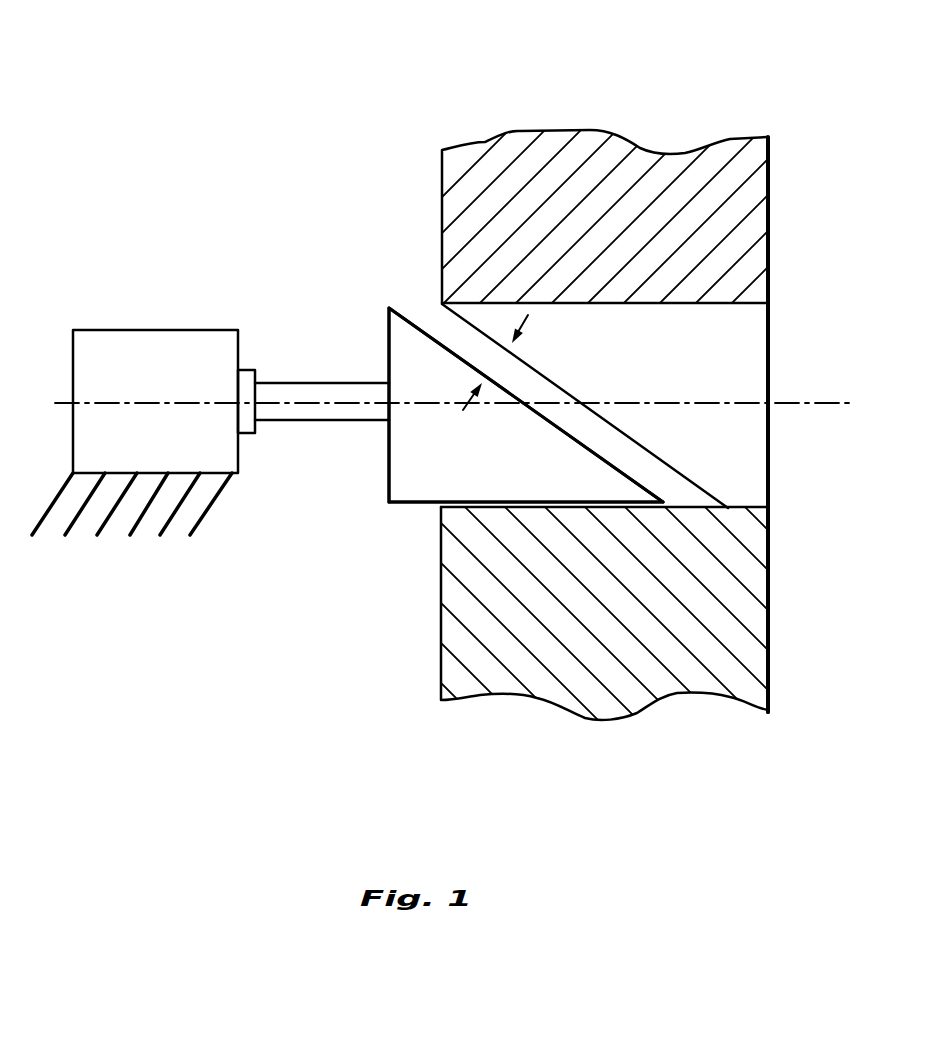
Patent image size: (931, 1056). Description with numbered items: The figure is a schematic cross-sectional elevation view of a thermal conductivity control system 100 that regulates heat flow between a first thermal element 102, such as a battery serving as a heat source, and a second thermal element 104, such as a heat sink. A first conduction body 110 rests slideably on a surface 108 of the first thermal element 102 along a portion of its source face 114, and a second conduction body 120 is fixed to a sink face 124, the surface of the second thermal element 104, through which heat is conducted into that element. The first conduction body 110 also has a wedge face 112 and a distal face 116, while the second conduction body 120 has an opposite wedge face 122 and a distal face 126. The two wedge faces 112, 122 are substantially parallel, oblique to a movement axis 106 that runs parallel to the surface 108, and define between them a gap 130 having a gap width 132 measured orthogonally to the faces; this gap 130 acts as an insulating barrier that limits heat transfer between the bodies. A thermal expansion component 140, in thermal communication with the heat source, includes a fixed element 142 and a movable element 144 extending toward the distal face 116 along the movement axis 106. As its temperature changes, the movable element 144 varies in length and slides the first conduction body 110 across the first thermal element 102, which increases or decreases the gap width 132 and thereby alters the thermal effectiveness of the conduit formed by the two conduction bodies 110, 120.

The thermal conductivity control system 100 is at (288, 120).
The first thermal element 102 is at (448, 675).
The second thermal element 104 is at (448, 178).
The movement axis 106 is at (838, 404).
The surface 108 is at (468, 510).
The first conduction body 110 is at (382, 480).
The wedge face 112 is at (608, 466).
The source face 114 is at (413, 508).
The distal face 116 is at (387, 437).
The second conduction body 120 is at (760, 340).
The wedge face 122 is at (694, 483).
The sink face 124 is at (655, 265).
The distal face 126 is at (770, 457).
The gap 130 is at (442, 331).
The gap width 132 is at (497, 368).
The thermal expansion component 140 is at (210, 375).
The fixed element 142 is at (150, 329).
The movable element 144 is at (312, 393).